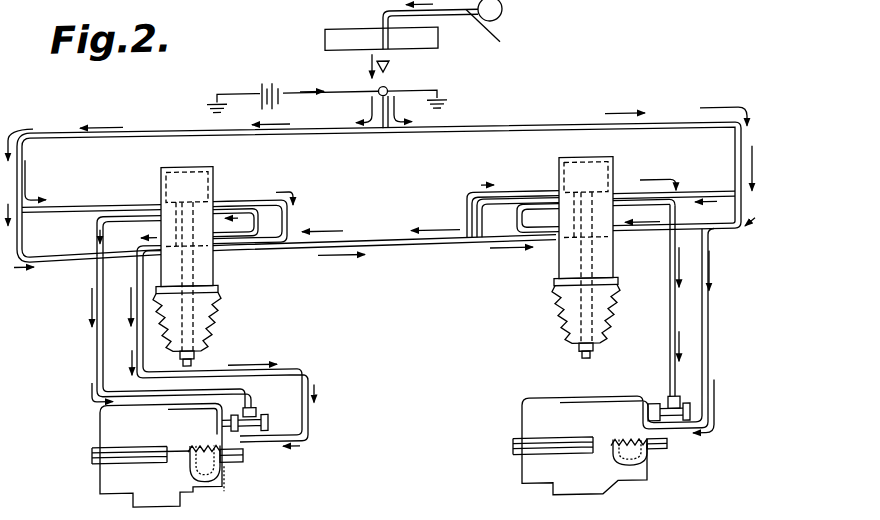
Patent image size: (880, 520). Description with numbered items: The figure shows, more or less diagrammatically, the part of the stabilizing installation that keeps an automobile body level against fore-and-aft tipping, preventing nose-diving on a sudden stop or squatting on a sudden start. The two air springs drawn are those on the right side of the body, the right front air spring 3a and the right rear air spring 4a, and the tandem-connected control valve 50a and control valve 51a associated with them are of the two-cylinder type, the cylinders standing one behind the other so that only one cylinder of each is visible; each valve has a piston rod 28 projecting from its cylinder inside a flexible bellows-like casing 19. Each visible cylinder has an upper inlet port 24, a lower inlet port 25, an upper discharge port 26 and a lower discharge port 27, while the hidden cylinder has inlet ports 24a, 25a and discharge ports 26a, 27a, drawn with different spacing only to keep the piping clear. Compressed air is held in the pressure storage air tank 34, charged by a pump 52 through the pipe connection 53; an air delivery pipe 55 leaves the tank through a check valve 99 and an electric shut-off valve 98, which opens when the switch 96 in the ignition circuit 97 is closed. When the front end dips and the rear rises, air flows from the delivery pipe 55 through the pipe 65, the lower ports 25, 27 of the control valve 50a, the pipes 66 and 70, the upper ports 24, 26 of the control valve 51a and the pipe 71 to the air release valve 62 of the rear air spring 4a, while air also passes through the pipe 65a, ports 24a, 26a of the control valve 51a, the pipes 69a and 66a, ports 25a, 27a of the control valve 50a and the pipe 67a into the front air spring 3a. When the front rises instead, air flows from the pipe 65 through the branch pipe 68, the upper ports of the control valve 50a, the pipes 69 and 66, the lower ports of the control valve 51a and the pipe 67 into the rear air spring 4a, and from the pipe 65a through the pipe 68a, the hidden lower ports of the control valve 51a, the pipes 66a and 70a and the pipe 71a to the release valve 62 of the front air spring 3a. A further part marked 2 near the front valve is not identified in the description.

The spark plug assembly 2 is at (207, 313).
The right front air spring 3a is at (108, 421).
The right rear air spring 4a is at (538, 402).
The flexible bellows-like casing 19 is at (207, 330).
The upper inlet port 24 is at (161, 197).
The upper inlet port of second cylinder 24a is at (447, 217).
The lower inlet port 25 is at (164, 247).
The lower inlet port of second cylinder 25a is at (225, 246).
The upper discharge port 26 is at (214, 197).
The upper discharge port of second cylinder 26a is at (628, 256).
The lower discharge port 27 is at (216, 250).
The lower discharge port of second cylinder 27a is at (556, 245).
The piston rod 28 is at (198, 310).
The pressure storage air tank 34 is at (438, 38).
The control valve 50a is at (204, 166).
The control valve 51a is at (612, 163).
The pump 52 is at (502, 10).
The pipe connection 53 is at (495, 31).
The air delivery pipe 55 is at (390, 79).
The air release valve 62 is at (267, 412).
The pipe 65 is at (149, 125).
The pipe 65a is at (555, 126).
The pipe 66 is at (304, 247).
The pipe 66a is at (383, 237).
The pipe 67 is at (710, 321).
The pipe 67a is at (137, 339).
The branch pipe 68 is at (90, 197).
The pipe 68a is at (719, 236).
The pipe 69 is at (245, 197).
The pipe 69a is at (518, 218).
The pipe 70 is at (512, 194).
The pipe 70a is at (258, 218).
The pipe 71 is at (670, 323).
The pipe 71a is at (97, 353).
The switch 96 is at (312, 88).
The ignition circuit 97 is at (358, 90).
The electric shut-off valve 98 is at (378, 93).
The check valve 99 is at (390, 62).